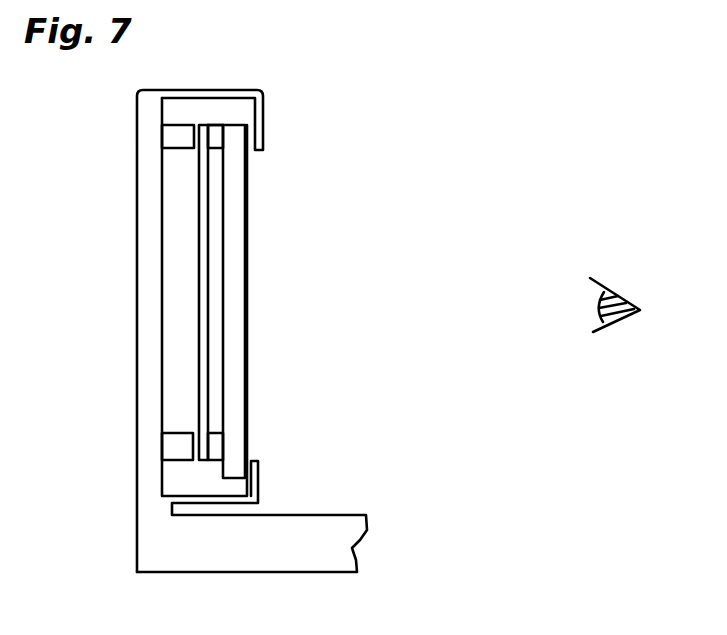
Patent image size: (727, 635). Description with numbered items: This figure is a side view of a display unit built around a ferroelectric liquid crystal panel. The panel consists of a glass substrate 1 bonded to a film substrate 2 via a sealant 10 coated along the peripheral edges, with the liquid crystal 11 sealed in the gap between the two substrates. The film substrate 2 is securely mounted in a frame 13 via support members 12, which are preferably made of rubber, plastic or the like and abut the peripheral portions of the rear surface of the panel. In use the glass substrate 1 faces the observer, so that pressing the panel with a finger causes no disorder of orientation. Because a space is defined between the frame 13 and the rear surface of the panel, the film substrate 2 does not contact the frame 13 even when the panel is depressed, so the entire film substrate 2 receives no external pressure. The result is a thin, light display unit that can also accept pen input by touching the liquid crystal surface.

The glass substrate 1 is at (237, 372).
The film substrate 2 is at (203, 322).
The sealant 10 is at (217, 137).
The liquid crystal 11 is at (217, 243).
The support members 12 is at (176, 137).
The frame 13 is at (147, 372).